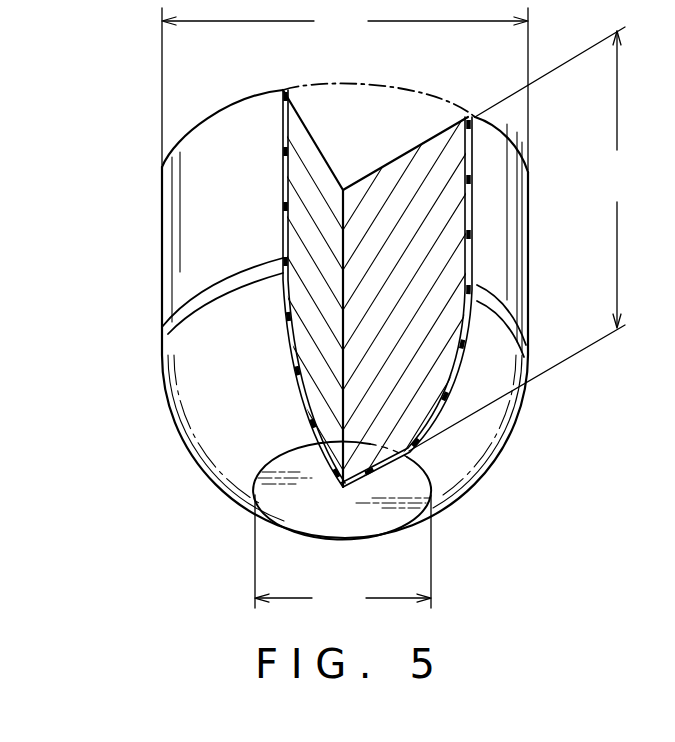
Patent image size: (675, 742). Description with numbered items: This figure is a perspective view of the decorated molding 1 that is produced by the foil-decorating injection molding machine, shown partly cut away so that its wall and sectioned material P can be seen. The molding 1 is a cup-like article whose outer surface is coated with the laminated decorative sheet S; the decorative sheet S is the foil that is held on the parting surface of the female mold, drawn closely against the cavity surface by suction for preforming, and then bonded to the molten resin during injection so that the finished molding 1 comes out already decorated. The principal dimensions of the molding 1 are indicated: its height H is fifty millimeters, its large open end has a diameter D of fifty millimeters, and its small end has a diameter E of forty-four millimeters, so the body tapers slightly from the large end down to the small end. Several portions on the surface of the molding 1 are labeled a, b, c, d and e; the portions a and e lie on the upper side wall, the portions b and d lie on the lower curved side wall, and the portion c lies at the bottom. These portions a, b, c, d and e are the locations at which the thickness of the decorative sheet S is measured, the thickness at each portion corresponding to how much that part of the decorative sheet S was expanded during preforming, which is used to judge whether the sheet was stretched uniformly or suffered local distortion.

The molding 1 is at (158, 321).
The portion a on the surface of the molding a is at (162, 185).
The portion b on the surface of the molding b is at (173, 423).
The portion c on the surface of the molding c is at (341, 493).
The portion d on the surface of the molding d is at (513, 427).
The portion e on the surface of the molding e is at (528, 188).
The decorative sheet S is at (283, 130).
The sectioned wall portion P is at (320, 173).
The diameter of the large end D is at (345, 89).
The height H is at (517, 239).
The diameter of the small end E is at (343, 555).